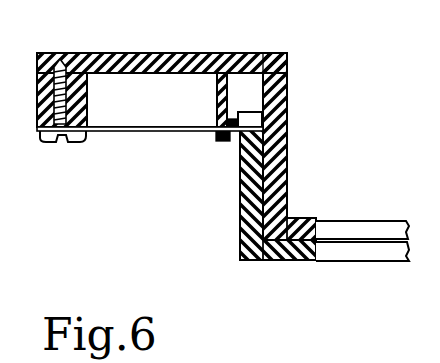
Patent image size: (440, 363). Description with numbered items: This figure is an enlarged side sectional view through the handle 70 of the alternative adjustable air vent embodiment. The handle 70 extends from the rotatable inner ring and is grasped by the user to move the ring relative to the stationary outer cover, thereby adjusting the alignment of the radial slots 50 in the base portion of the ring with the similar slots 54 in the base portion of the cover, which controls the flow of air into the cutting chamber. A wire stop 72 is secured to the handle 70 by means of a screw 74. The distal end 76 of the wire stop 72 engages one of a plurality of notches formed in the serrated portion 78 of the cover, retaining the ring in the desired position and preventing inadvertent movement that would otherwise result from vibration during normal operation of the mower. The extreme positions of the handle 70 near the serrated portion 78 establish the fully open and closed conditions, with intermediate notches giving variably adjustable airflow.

The radial slots 50 is at (370, 226).
The slots 54 is at (357, 250).
The handle 70 is at (140, 60).
The wire stop 72 is at (120, 131).
The screw 74 is at (50, 142).
The distal end 76 is at (284, 112).
The serrated portion 78 is at (240, 173).